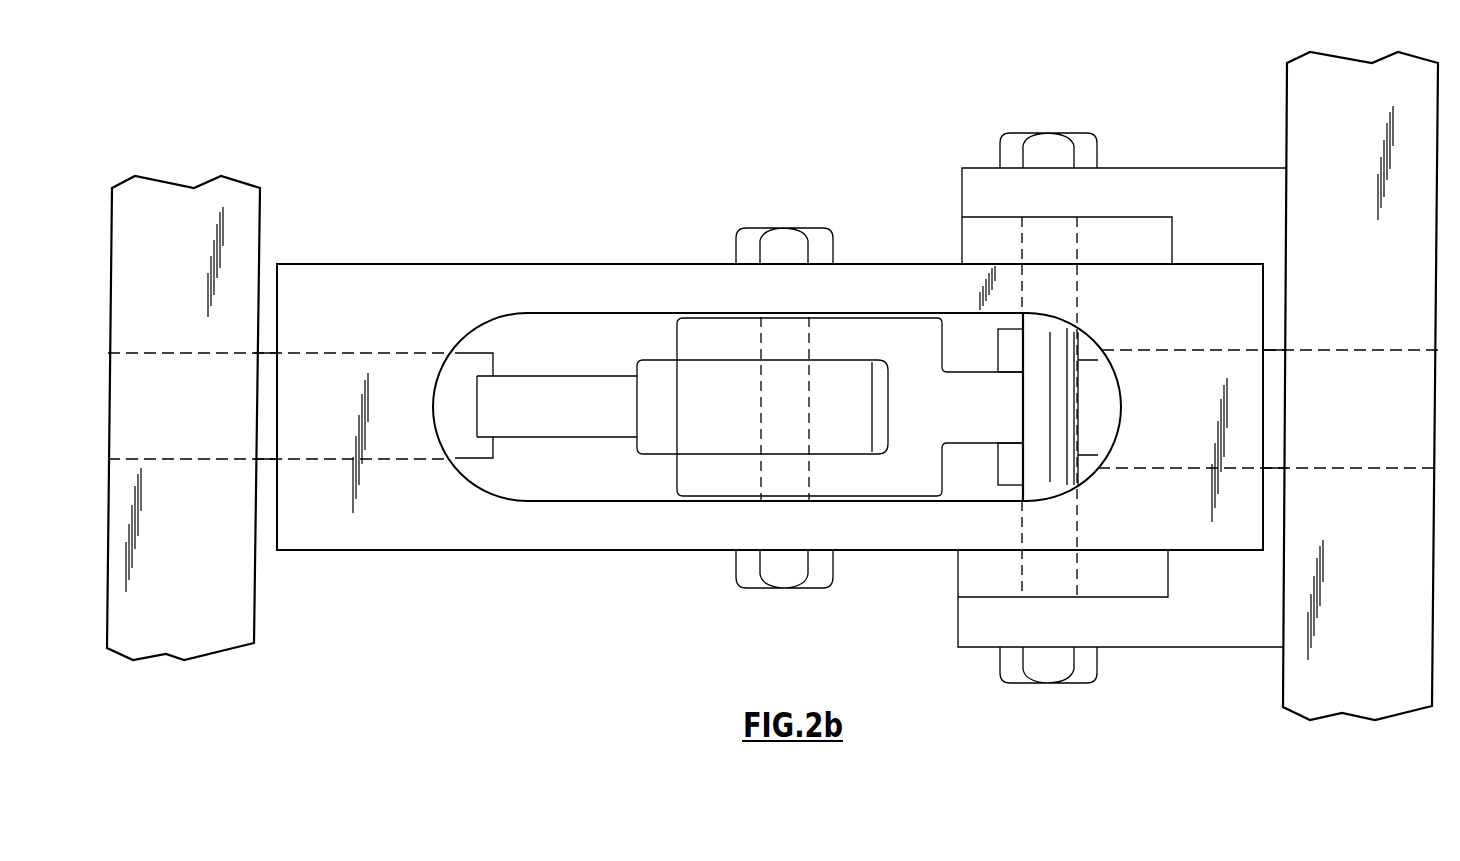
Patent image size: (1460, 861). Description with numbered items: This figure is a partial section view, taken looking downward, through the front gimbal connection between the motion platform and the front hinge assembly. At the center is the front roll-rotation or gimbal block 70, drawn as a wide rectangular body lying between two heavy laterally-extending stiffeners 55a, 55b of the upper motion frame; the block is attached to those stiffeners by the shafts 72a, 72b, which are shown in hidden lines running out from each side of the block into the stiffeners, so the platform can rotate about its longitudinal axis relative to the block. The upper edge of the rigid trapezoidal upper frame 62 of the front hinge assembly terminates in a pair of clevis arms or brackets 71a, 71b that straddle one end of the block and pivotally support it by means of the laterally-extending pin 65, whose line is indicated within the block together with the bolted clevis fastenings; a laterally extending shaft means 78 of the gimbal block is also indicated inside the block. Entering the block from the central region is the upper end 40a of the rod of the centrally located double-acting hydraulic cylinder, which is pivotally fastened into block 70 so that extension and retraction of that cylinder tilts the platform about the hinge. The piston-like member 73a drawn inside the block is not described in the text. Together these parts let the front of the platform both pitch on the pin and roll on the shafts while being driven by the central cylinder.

The front roll-rotation block 70 is at (381, 283).
The shaft 72a is at (268, 361).
The shaft 72b is at (1277, 360).
The piston 73a is at (665, 385).
The upper end of cylinder rod 40a is at (849, 337).
The laterally extending shaft means 78 is at (786, 437).
The pin 65 is at (1054, 470).
The clevis arm 71a is at (977, 573).
The clevis arm 71b is at (1127, 235).
The upper frame 62 is at (1210, 627).
The laterally-extending stiffener 55a is at (229, 607).
The laterally-extending stiffener 55b is at (1300, 683).